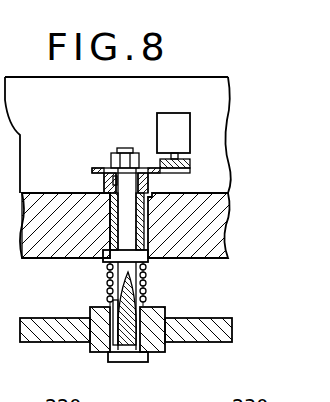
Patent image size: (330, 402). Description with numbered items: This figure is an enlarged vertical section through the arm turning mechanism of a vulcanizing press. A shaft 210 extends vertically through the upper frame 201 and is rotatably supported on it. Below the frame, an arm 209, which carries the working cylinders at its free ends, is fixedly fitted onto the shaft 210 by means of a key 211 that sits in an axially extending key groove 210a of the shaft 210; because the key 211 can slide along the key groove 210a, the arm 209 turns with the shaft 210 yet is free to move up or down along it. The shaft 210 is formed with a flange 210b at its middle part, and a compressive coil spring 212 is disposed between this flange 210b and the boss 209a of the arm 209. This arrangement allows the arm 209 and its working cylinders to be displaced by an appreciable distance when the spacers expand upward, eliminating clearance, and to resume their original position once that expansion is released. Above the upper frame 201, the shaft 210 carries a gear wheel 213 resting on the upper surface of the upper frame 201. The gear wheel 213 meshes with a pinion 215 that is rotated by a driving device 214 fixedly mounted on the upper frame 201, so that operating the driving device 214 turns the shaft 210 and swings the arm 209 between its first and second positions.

The upper frame 201 is at (225, 225).
The arm 209 is at (226, 320).
The boss 209a is at (155, 310).
The shaft 210 is at (145, 362).
The key groove 210a is at (165, 349).
The flange 210b is at (150, 260).
The key 211 is at (108, 346).
The compressive coil spring 212 is at (108, 274).
The gear wheel 213 is at (96, 166).
The driving device 214 is at (190, 133).
The pinion 215 is at (190, 170).